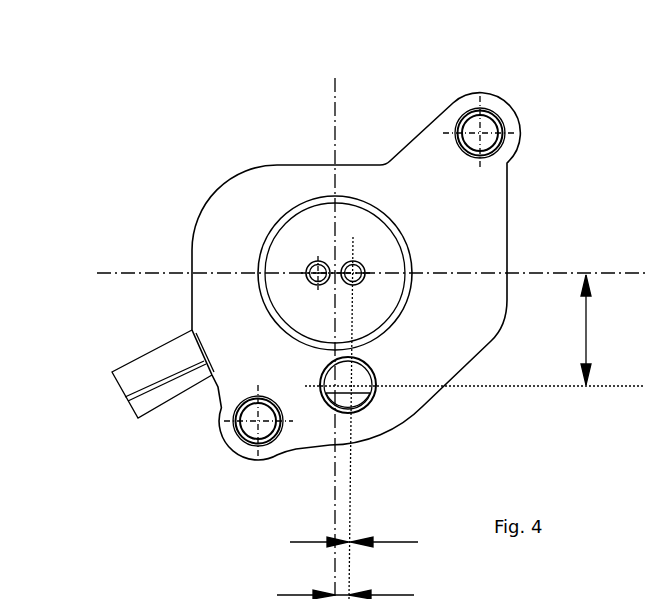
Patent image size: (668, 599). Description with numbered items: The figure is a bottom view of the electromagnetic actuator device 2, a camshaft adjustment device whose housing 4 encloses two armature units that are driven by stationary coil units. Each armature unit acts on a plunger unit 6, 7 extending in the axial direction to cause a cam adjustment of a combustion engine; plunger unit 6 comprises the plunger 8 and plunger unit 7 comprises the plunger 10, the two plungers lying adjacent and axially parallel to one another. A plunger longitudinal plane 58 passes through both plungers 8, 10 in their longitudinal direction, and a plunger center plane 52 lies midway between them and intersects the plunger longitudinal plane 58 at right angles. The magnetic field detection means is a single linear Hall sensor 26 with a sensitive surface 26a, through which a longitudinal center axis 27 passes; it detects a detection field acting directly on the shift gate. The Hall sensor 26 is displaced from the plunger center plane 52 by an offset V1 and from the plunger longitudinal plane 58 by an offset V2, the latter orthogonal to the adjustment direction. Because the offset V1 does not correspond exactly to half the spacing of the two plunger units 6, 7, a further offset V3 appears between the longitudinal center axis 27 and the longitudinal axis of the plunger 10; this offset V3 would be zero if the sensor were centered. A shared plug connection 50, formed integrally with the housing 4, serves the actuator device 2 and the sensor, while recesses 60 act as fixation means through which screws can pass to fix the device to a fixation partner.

The actuator device 2 is at (356, 269).
The housing 4 is at (295, 150).
The plunger unit 6 is at (215, 256).
The plunger 8 is at (308, 268).
The plunger unit 7 is at (483, 255).
The plunger 10 is at (363, 265).
The Hall sensor 26 is at (376, 389).
The sensitive surface 26a is at (371, 393).
The longitudinal center axis 27 is at (362, 399).
The plug connection 50 is at (142, 358).
The plunger center plane 52 is at (337, 87).
The plunger longitudinal plane 58 is at (526, 275).
The recesses 60 is at (491, 110).
The offset V1 is at (346, 580).
The offset V2 is at (608, 330).
The offset V3 is at (361, 528).